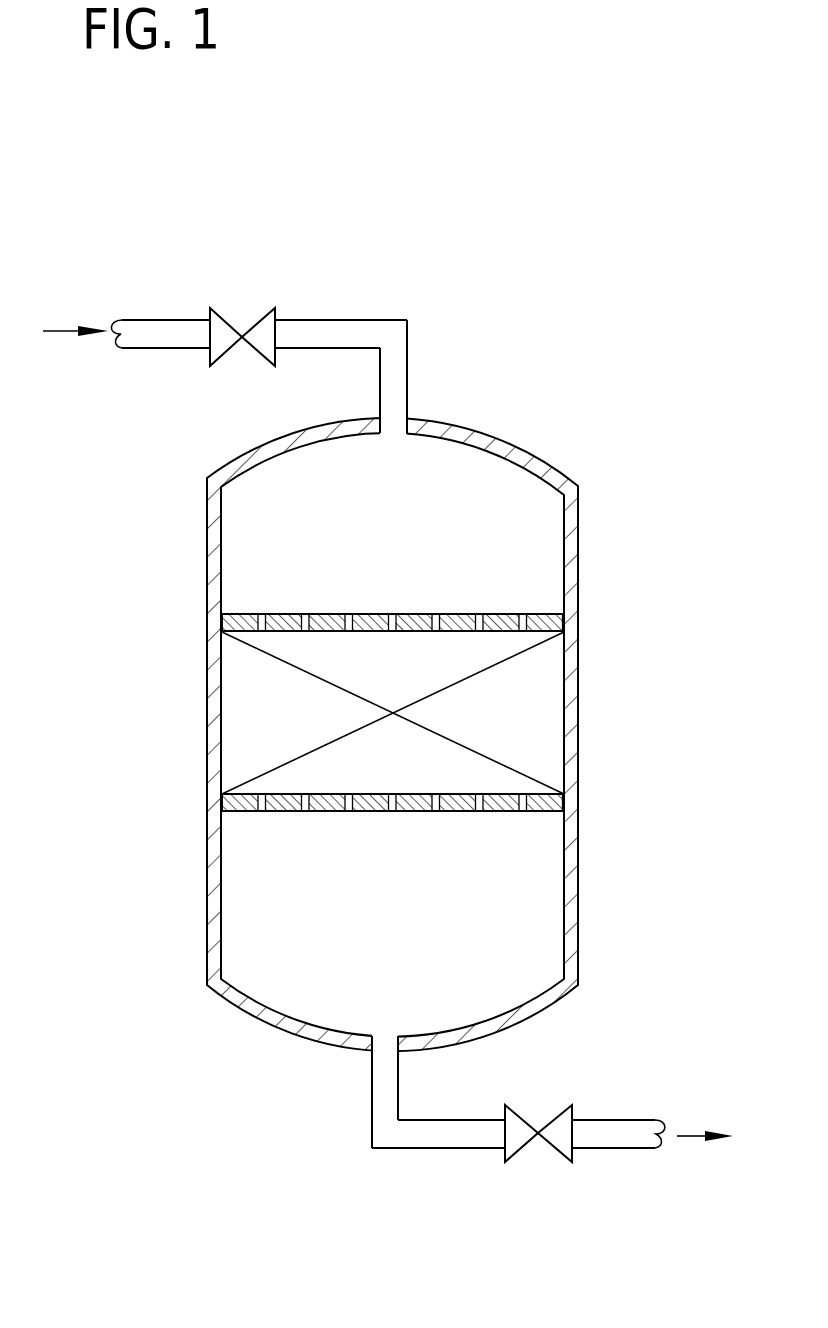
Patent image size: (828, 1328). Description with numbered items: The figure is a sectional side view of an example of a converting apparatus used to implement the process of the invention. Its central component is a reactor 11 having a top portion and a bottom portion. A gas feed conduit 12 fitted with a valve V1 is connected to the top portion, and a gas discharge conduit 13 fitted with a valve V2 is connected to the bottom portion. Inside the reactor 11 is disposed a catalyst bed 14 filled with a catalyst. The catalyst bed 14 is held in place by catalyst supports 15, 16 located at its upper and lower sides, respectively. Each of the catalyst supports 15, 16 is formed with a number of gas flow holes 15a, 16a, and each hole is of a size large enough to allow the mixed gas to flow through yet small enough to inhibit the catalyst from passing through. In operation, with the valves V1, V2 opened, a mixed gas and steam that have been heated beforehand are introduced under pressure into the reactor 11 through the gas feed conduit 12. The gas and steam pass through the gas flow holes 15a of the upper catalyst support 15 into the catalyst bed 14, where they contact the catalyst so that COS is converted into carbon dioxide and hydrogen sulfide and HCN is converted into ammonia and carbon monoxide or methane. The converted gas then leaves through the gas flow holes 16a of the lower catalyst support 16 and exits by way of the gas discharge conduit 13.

The reactor 11 is at (580, 578).
The gas feed conduit 12 is at (401, 320).
The gas discharge conduit 13 is at (638, 1120).
The catalyst bed 14 is at (555, 728).
The catalyst support 15 is at (266, 614).
The gas flow holes 15a is at (298, 632).
The catalyst support 16 is at (268, 812).
The gas flow holes 16a is at (294, 794).
The valve V1 is at (258, 310).
The valve V2 is at (535, 1148).